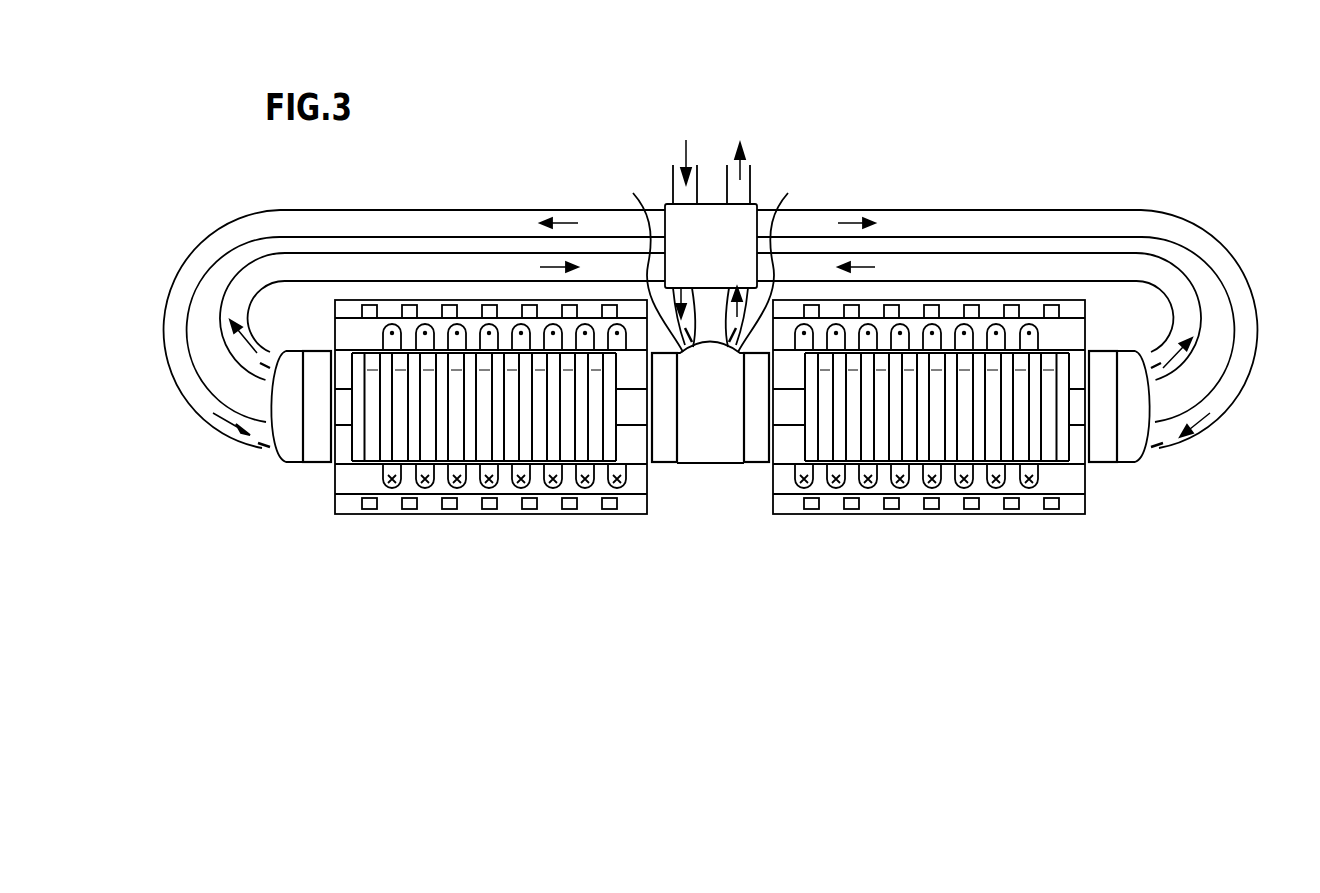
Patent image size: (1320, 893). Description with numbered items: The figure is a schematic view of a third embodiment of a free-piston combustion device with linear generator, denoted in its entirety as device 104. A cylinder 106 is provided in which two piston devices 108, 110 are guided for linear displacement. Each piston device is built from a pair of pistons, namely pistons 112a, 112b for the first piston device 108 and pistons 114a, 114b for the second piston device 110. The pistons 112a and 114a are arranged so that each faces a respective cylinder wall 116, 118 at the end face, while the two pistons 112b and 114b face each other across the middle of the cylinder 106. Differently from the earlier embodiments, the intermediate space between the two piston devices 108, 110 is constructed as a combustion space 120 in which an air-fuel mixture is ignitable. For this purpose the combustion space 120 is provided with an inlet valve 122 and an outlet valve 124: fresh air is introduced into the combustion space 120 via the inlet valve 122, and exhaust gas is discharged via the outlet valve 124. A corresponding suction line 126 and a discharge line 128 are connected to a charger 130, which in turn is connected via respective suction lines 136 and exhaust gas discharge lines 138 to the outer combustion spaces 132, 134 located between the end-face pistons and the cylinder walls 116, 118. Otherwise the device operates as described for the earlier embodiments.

The inventive device 104 is at (548, 162).
The cylinder 106 is at (770, 342).
The piston device 108 is at (315, 468).
The piston device 110 is at (1106, 470).
The piston 112a is at (317, 363).
The piston 112b is at (670, 448).
The piston 114a is at (1103, 380).
The piston 114b is at (763, 447).
The cylinder wall 116 is at (268, 412).
The cylinder wall 118 is at (1160, 412).
The combustion space 120 is at (718, 440).
The inlet valve 122 is at (686, 346).
The outlet valve 124 is at (734, 354).
The suction line 126 is at (633, 193).
The discharge line 128 is at (801, 172).
The charger 130 is at (717, 220).
The outer combustion space 132 is at (288, 458).
The outer combustion space 134 is at (1128, 455).
The suction line 136 is at (1240, 380).
The exhaust gas discharge line 138 is at (1003, 275).